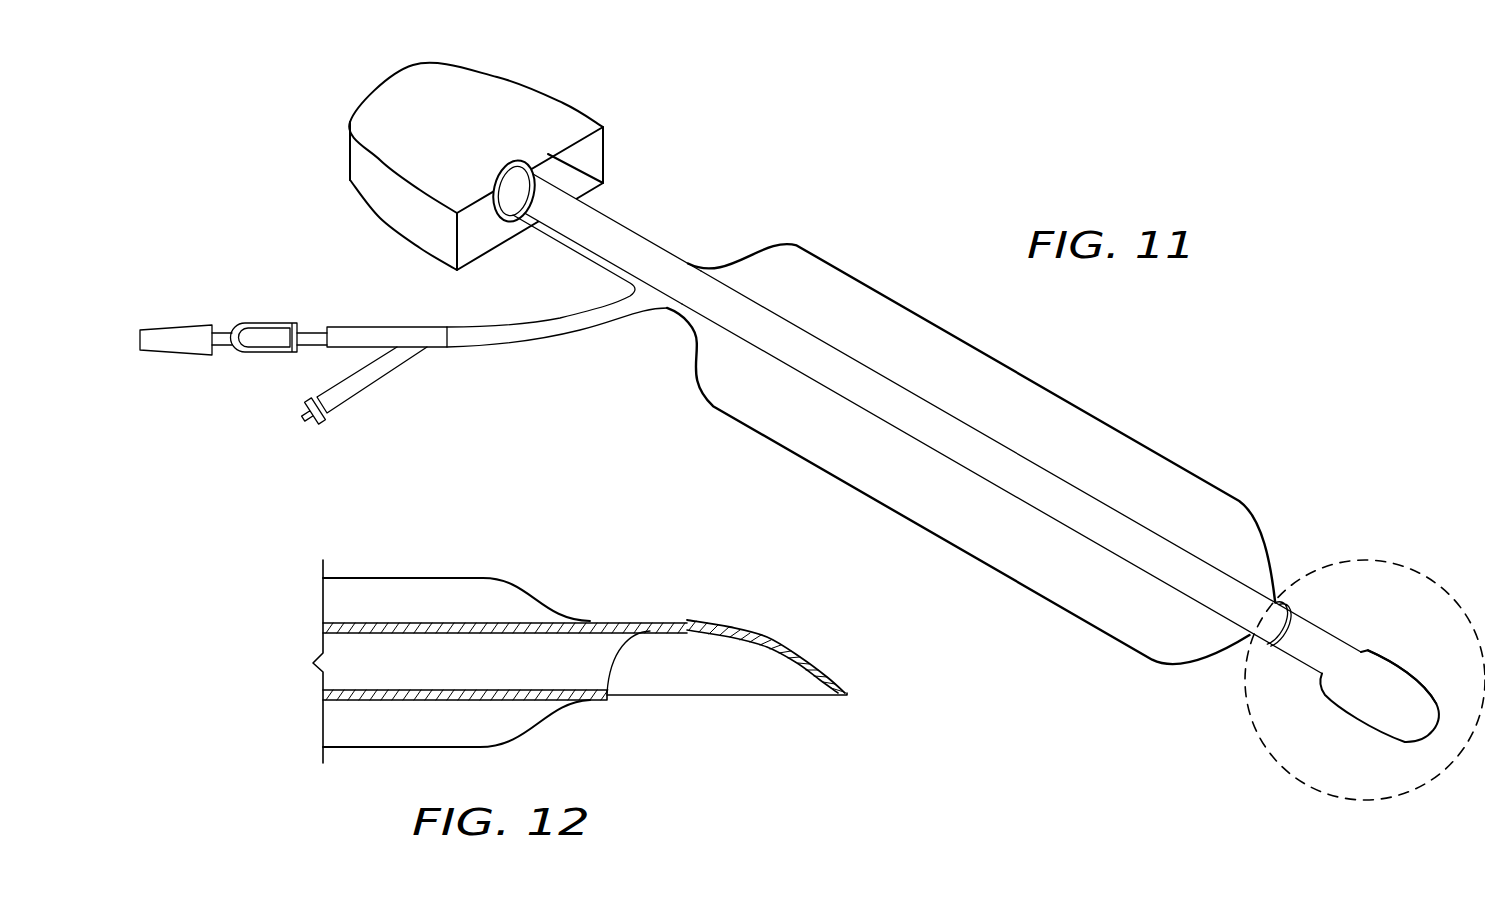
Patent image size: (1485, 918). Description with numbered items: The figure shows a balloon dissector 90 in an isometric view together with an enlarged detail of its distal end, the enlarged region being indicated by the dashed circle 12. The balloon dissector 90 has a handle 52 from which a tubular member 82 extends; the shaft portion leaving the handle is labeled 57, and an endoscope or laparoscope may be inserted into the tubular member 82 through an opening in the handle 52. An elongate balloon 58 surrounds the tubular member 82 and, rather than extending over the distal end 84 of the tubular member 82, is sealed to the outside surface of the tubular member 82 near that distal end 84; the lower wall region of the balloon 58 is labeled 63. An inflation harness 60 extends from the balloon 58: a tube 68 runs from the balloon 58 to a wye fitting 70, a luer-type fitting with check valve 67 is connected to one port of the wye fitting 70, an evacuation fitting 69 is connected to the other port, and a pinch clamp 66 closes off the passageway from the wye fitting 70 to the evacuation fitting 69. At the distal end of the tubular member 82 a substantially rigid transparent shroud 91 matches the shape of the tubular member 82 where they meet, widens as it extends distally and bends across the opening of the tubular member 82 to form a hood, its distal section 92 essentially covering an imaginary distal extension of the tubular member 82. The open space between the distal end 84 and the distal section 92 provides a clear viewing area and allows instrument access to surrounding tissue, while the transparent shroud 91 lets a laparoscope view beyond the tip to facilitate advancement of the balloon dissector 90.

In FIG. 11, the handle 52 is at (511, 97).
In FIG. 11, the tube 57 is at (647, 230).
In FIG. 11, the balloon 58 is at (1087, 403).
In FIG. 12, the balloon 58 is at (490, 578).
In FIG. 11, the inflation harness 60 is at (304, 289).
In FIG. 11, the sheath lower wall 63 is at (1077, 594).
In FIG. 11, the pinch clamp 66 is at (245, 356).
In FIG. 11, the luer-type fitting with check valve 67 is at (318, 425).
In FIG. 11, the tube 68 is at (477, 346).
In FIG. 11, the evacuation fitting 69 is at (180, 325).
In FIG. 11, the wye fitting 70 is at (383, 325).
In FIG. 11, the tubular member 82 is at (967, 423).
In FIG. 12, the tubular member 82 is at (400, 620).
In FIG. 11, the distal end 84 is at (1237, 633).
In FIG. 12, the distal end 84 is at (608, 700).
In FIG. 11, the balloon dissector 90 is at (933, 258).
In FIG. 12, the balloon dissector 90 is at (478, 558).
In FIG. 11, the shroud 91 is at (1397, 663).
In FIG. 12, the shroud 91 is at (740, 625).
In FIG. 11, the distal section 92 is at (1418, 703).
In FIG. 12, the distal section 92 is at (818, 653).
In FIG. 11, the detail circle 12 is at (1401, 562).